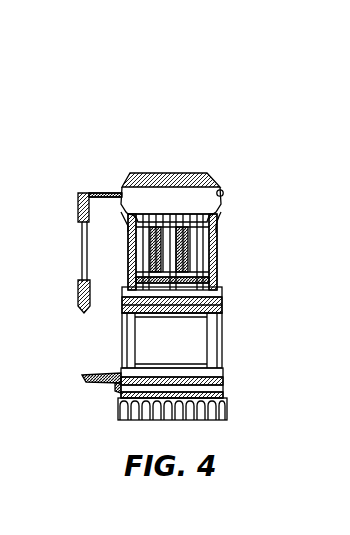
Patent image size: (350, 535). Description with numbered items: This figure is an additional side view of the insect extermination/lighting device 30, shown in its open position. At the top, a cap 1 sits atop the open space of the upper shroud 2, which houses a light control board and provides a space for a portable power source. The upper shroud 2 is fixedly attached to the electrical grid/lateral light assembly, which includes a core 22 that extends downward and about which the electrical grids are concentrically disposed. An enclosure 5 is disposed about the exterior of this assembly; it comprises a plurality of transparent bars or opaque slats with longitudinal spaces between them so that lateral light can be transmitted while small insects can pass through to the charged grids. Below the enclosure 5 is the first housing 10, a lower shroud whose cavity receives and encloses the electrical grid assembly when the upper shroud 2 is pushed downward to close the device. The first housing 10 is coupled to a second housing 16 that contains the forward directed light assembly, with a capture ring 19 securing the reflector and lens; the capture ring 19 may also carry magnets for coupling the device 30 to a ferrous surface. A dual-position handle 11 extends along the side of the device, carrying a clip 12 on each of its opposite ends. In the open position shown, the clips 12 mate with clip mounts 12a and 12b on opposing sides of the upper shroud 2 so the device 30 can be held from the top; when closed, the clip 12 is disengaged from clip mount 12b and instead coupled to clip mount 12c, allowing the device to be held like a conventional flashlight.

The insect extermination/lighting device 30 is at (186, 109).
The cap 1 is at (207, 173).
The clip mount 12a is at (122, 193).
The clip mount 12b is at (223, 192).
The upper shroud 2 is at (222, 208).
The dual-position handle 11 is at (82, 256).
The enclosure 5 is at (216, 248).
The core 22 is at (213, 279).
The first housing 10 is at (218, 338).
The second housing 16 is at (222, 390).
The capture ring 19 is at (225, 408).
The clip 12 is at (83, 379).
The clip mount 12c is at (118, 387).